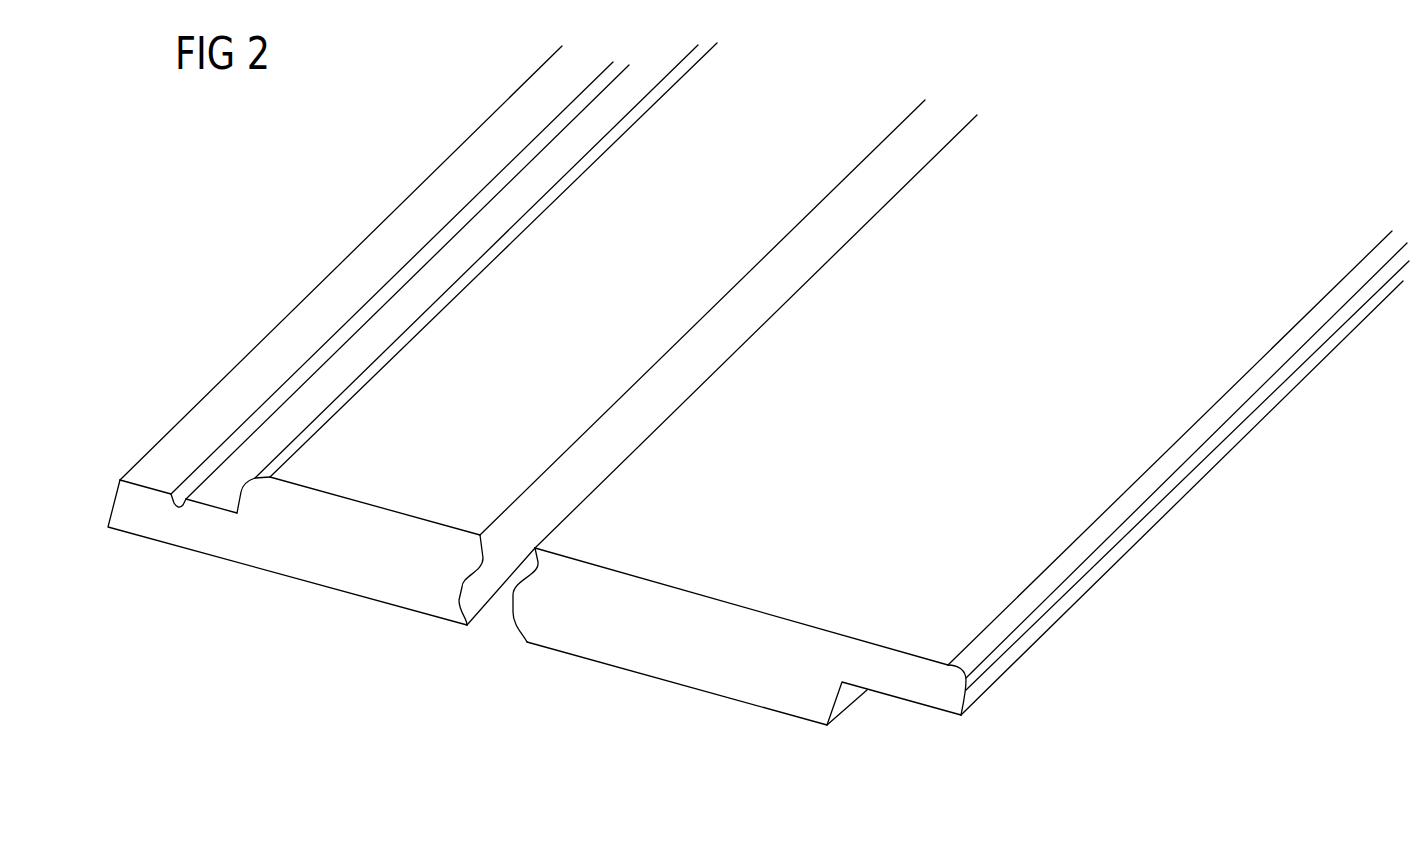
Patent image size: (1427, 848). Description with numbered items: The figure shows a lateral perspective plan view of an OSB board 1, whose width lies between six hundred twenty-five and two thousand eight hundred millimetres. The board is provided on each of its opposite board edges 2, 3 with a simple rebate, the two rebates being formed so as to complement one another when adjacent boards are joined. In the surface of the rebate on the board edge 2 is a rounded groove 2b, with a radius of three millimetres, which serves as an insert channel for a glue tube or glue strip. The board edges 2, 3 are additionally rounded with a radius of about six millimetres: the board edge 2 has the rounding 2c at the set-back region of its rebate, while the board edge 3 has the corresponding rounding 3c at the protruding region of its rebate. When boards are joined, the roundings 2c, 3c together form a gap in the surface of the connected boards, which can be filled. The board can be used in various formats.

The OSB board 1 is at (732, 438).
The board edge 2 is at (490, 334).
The rounded groove 2b is at (178, 508).
The rounding 2c is at (258, 483).
The board edge 3 is at (961, 420).
The rounding 3c is at (965, 677).